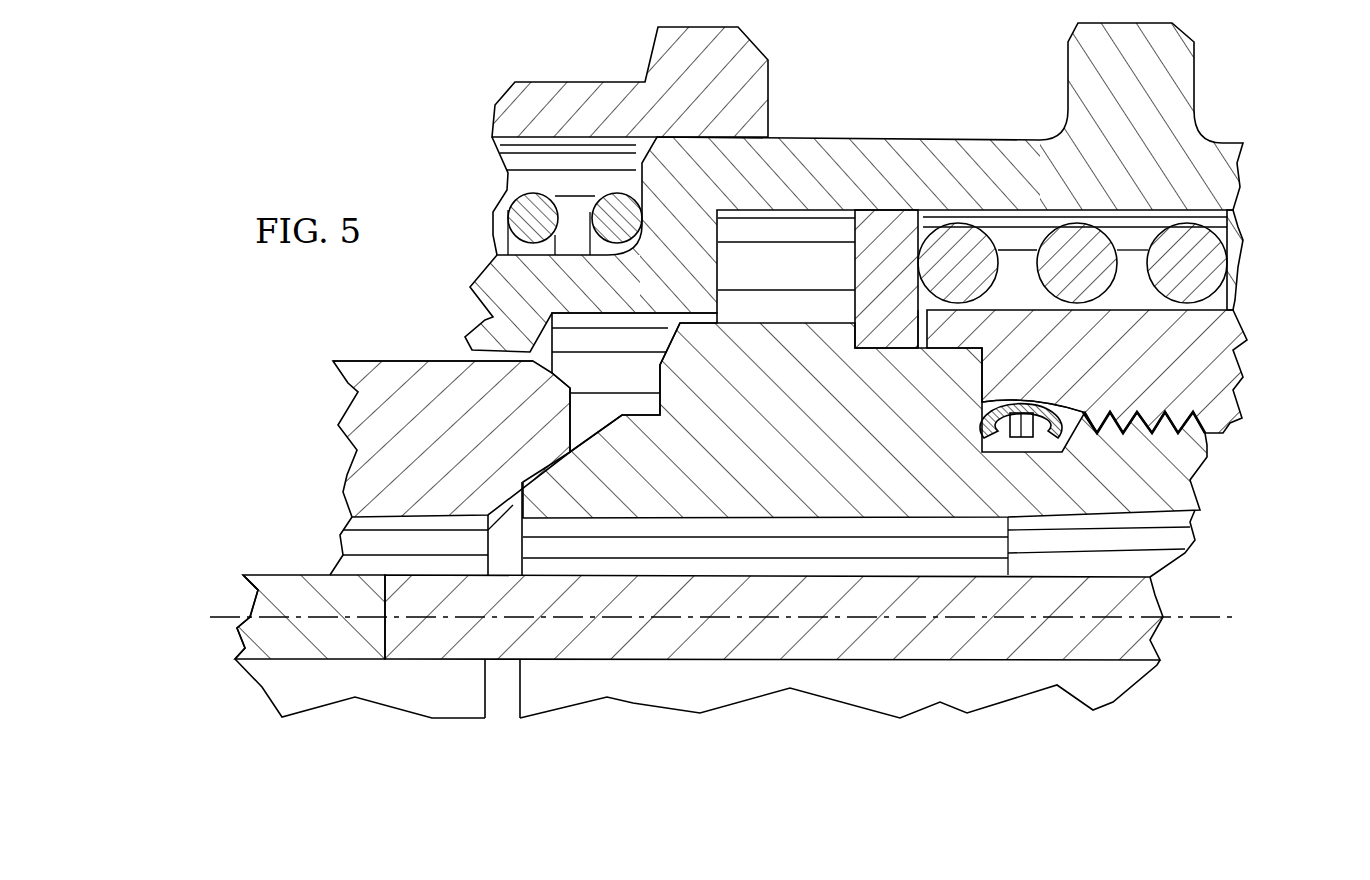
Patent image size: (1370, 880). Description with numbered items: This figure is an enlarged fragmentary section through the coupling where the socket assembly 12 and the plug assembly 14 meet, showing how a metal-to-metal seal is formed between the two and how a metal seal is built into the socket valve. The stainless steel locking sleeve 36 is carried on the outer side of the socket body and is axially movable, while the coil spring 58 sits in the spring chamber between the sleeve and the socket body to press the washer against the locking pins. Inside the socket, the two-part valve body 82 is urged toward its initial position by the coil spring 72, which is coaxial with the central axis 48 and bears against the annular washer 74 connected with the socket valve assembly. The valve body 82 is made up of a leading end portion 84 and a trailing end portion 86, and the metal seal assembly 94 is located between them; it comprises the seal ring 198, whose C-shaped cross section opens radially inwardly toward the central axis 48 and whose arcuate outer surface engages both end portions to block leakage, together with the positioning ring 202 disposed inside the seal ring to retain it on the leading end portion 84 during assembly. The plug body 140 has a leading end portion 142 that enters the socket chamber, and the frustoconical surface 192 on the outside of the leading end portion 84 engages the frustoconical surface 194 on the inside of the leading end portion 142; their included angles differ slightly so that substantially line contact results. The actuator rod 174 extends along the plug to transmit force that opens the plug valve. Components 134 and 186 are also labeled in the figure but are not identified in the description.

The socket assembly 12 is at (1278, 140).
The plug assembly 14 is at (240, 395).
The locking sleeve 36 is at (607, 115).
The longitudinal central axis 48 is at (1190, 617).
The coil spring 58 is at (537, 215).
The coil spring 72 is at (958, 248).
The annular washer 74 is at (888, 243).
The valve body 82 is at (1210, 458).
The leading end portion 84 is at (1175, 480).
The trailing end portion 86 is at (1205, 375).
The metal seal assembly 94 is at (988, 402).
The shaft 134 is at (1000, 642).
The plug body 140 is at (330, 367).
The leading end portion 142 is at (408, 447).
The actuator rod 174 is at (277, 593).
The boss 186 is at (1150, 72).
The frustoconical surface 192 is at (605, 420).
The frustoconical surface 194 is at (505, 541).
The seal ring 198 is at (982, 425).
The positioning ring 202 is at (1027, 437).